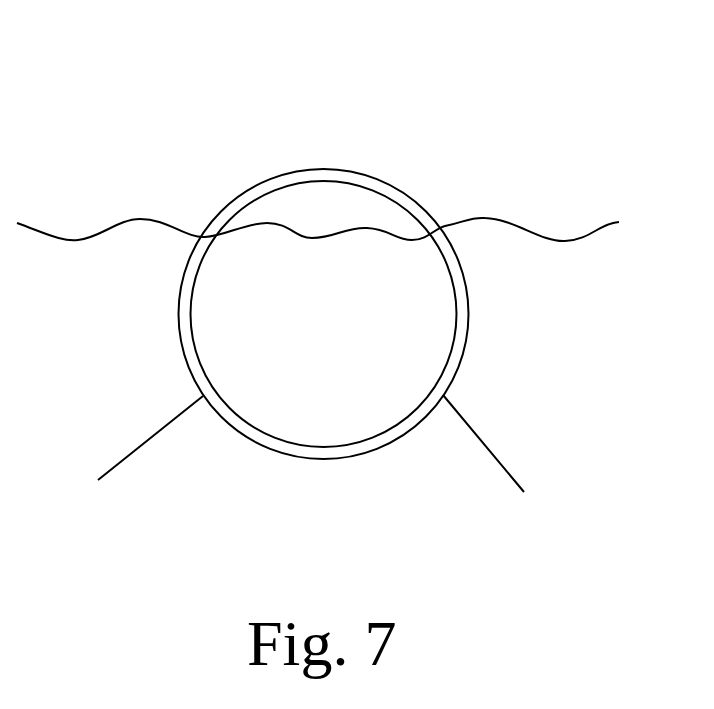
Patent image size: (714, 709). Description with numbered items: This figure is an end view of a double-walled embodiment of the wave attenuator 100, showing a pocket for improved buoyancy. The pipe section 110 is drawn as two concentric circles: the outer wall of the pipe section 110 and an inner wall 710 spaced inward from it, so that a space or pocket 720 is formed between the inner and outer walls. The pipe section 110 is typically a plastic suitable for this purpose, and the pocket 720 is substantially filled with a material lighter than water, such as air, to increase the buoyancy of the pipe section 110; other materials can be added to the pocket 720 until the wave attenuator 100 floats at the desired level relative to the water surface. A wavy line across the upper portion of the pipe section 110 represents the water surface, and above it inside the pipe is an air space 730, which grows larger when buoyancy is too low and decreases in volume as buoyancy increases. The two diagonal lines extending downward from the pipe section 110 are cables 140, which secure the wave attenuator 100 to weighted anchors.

The wave attenuator 100 is at (379, 66).
The pipe section 110 is at (470, 309).
The cables 140 is at (499, 459).
The inner wall 710 is at (196, 350).
The pocket 720 is at (183, 287).
The air space 730 is at (345, 208).